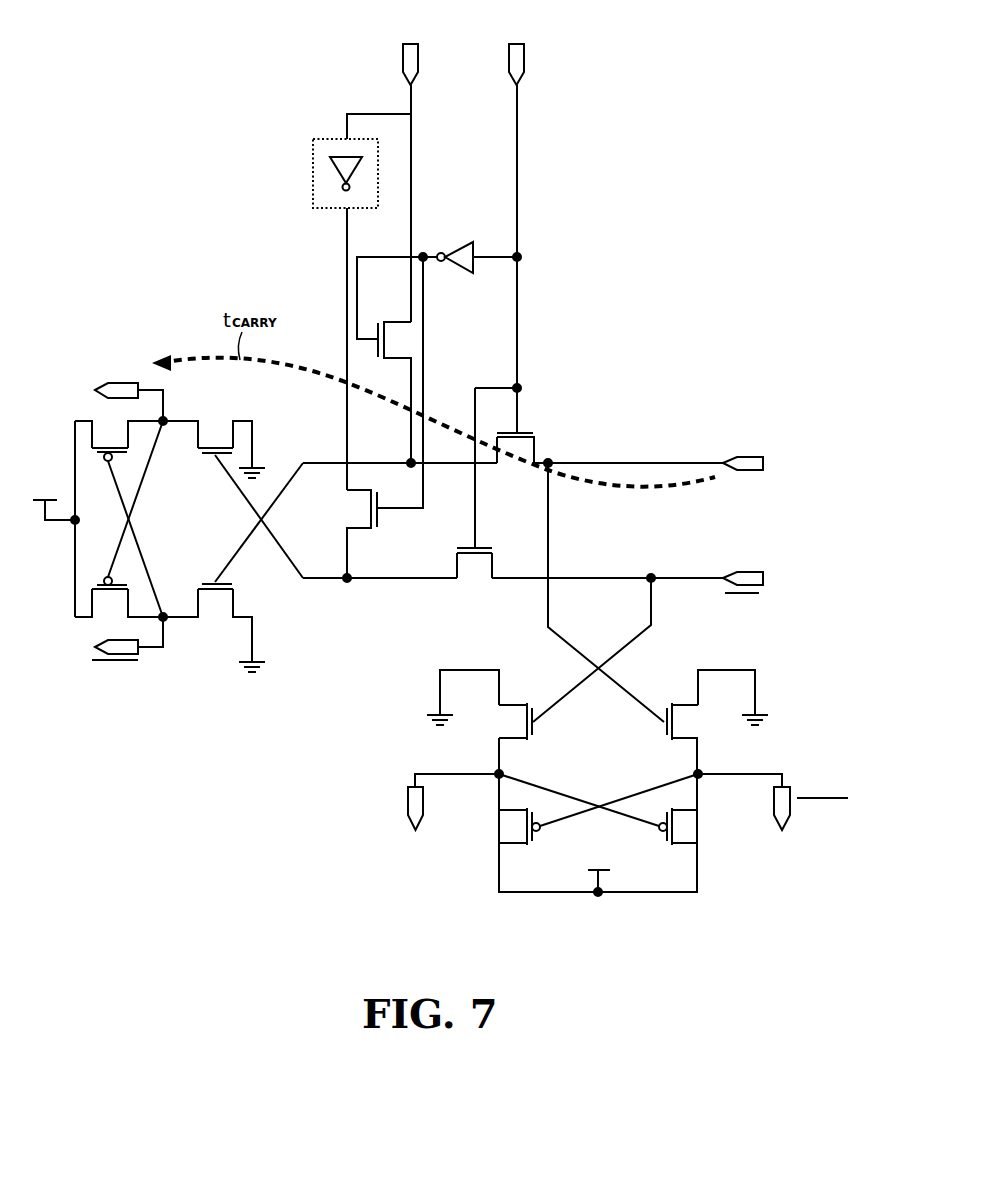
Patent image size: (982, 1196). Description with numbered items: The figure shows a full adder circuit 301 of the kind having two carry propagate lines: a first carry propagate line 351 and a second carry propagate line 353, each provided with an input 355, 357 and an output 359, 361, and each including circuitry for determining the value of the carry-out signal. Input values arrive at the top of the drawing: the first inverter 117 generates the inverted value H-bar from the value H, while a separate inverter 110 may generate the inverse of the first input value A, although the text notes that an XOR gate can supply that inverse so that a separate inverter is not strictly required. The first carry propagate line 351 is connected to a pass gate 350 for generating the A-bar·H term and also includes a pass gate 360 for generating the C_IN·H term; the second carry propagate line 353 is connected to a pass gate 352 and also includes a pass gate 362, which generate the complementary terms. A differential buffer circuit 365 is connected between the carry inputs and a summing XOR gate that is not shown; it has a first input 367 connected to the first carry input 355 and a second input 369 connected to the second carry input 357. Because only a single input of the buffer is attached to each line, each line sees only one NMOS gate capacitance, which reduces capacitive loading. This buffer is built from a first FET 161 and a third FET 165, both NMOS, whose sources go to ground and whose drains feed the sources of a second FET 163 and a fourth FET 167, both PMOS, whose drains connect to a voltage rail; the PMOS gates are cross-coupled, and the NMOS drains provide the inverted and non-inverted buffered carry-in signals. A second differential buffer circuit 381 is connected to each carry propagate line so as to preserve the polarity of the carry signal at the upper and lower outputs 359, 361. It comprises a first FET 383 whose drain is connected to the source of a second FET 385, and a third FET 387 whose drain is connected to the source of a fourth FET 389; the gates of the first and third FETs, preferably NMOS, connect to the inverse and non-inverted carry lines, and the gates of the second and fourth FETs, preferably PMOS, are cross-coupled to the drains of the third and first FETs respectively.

The full adder circuit 301 is at (563, 38).
The separate inverter 110 is at (313, 153).
The first inverter 117 is at (458, 250).
The pass gate 350 is at (378, 330).
The pass gate 352 is at (357, 506).
The pass gate 360 is at (528, 432).
The pass gate 362 is at (473, 567).
The first input 367 is at (563, 475).
The first carry propagate line 351 is at (650, 460).
The second carry propagate line 353 is at (602, 577).
The first carry input 355 is at (760, 457).
The second carry input 357 is at (760, 572).
The second input 369 is at (654, 581).
The output 359 is at (99, 397).
The output 361 is at (99, 646).
The second differential buffer circuit 381 is at (208, 624).
The first FET 383 is at (207, 458).
The second FET 385 is at (96, 460).
The third FET 387 is at (205, 583).
The fourth FET 389 is at (98, 582).
The differential buffer circuit 365 is at (767, 748).
The first FET 161 is at (533, 736).
The second FET 163 is at (533, 841).
The third FET 165 is at (666, 736).
The fourth FET 167 is at (666, 841).